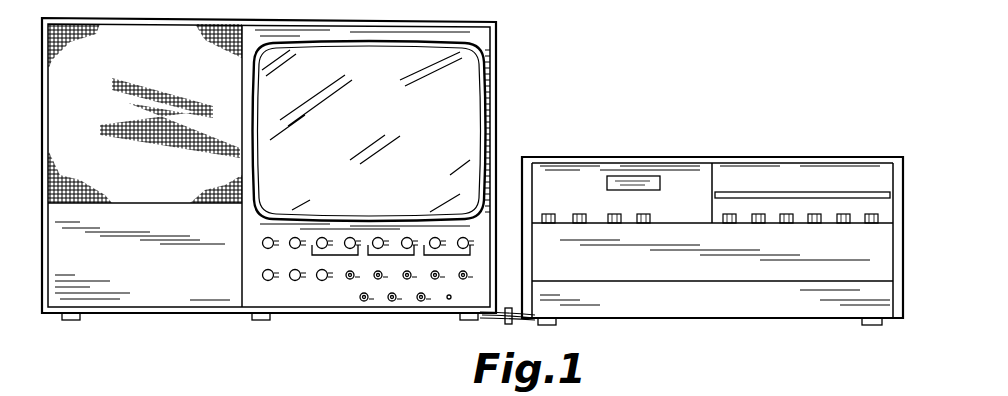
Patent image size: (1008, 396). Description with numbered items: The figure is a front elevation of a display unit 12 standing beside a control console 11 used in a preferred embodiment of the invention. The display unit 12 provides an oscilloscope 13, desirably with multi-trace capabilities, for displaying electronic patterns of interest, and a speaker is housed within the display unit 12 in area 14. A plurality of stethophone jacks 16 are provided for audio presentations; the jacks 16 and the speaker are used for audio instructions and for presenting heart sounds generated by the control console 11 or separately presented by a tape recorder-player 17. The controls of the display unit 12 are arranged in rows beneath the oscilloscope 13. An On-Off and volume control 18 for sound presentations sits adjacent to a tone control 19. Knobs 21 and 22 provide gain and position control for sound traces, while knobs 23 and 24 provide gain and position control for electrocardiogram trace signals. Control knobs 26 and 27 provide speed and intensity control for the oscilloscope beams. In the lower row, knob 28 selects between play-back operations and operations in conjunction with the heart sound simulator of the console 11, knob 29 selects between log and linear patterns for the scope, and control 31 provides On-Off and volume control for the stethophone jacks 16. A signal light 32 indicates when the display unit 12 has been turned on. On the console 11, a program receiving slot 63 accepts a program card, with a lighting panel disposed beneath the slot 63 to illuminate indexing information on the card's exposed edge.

The control console 11 is at (683, 156).
The display unit 12 is at (507, 37).
The oscilloscope 13 is at (470, 89).
The speaker area 14 is at (140, 180).
The stethophone jacks 16 is at (420, 302).
The tape recorder-player 17 is at (628, 178).
The On-Off and volume control 18 is at (262, 243).
The tone control 19 is at (294, 237).
The sound trace gain control knob 21 is at (321, 237).
The sound trace position control knob 22 is at (349, 237).
The electrocardiogram trace gain control knob 23 is at (377, 237).
The electrocardiogram trace position control knob 24 is at (406, 237).
The beam speed control knob 26 is at (434, 237).
The beam intensity control knob 27 is at (462, 237).
The play-back/simulator selection knob 28 is at (262, 276).
The log/linear selection knob 29 is at (293, 282).
The stethophone jack On-Off and volume control 31 is at (321, 282).
The signal light 32 is at (448, 300).
The program receiving slot 63 is at (800, 192).